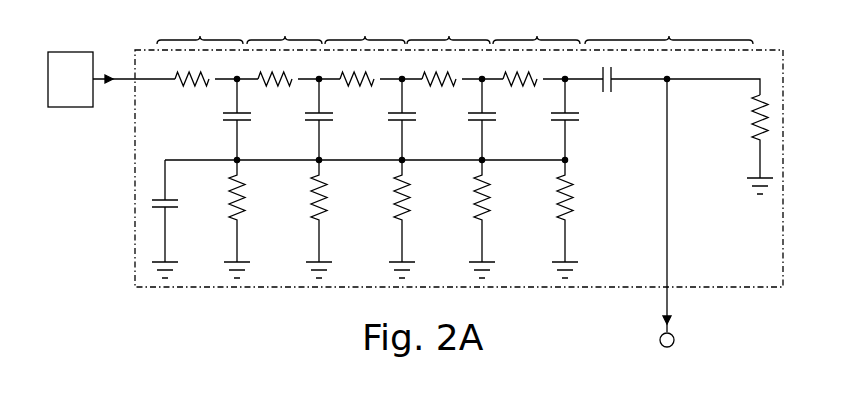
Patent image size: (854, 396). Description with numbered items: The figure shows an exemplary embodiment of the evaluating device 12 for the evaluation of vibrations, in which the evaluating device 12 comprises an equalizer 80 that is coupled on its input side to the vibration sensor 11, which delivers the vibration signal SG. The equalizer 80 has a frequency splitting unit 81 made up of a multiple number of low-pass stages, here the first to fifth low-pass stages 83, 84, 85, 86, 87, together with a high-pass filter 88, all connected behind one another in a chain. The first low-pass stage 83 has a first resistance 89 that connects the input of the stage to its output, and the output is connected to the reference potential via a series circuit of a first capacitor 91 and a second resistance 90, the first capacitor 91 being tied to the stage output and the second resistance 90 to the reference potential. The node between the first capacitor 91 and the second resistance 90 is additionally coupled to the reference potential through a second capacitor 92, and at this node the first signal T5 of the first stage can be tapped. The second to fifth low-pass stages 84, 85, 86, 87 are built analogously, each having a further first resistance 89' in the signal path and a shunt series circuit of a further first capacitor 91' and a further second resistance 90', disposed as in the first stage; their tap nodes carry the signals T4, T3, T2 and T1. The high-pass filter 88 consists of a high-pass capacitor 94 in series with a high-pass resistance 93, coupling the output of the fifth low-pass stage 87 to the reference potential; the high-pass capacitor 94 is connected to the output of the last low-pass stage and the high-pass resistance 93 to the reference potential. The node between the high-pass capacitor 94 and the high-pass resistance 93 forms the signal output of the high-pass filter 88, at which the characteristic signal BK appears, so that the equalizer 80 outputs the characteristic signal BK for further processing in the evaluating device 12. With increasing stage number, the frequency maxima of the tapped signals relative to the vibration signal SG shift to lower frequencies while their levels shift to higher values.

The vibration sensor 11 is at (70, 108).
The evaluating device 12 is at (65, 192).
The equalizer 80 is at (98, 192).
The frequency splitting unit 81 is at (135, 188).
The first low-pass stage 83 is at (200, 30).
The second low-pass stage 84 is at (284, 30).
The third low-pass stage 85 is at (365, 30).
The fourth low-pass stage 86 is at (448, 30).
The fifth low-pass stage 87 is at (536, 30).
The high-pass filter 88 is at (669, 30).
The first resistance 89 is at (189, 102).
The further first resistance 89' is at (400, 102).
The second resistance 90 is at (217, 219).
The further second resistance 90' is at (422, 219).
The first capacitor 91 is at (229, 119).
The further first capacitor 91' is at (432, 119).
The second capacitor 92 is at (170, 199).
The high-pass resistance 93 is at (749, 113).
The high-pass capacitor 94 is at (612, 90).
The vibration signal SG is at (134, 89).
The characteristic signal BK is at (679, 214).
The output signal of the fifth low-pass stage T1 is at (574, 153).
The output signal of the fourth low-pass stage T2 is at (491, 153).
The output signal of the third low-pass stage T3 is at (411, 153).
The second signal T4 is at (328, 153).
The first signal T5 is at (246, 153).